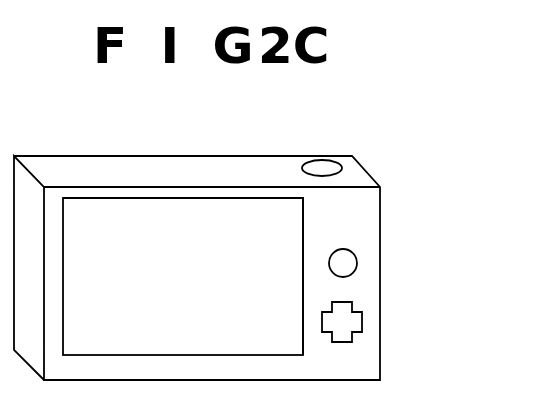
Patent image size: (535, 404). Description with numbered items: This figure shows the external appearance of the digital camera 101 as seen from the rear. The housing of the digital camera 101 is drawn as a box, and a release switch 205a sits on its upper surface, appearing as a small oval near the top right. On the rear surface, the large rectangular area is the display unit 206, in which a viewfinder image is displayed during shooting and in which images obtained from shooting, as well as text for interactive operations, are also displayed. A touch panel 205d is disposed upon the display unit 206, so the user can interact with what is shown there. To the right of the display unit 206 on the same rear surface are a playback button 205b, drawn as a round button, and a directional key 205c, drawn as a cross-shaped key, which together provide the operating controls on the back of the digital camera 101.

The digital camera 101 is at (59, 156).
The touch panel 205d is at (152, 198).
The display unit 206 is at (303, 212).
The release switch 205a is at (318, 160).
The playback button 205b is at (357, 262).
The directional key 205c is at (362, 321).